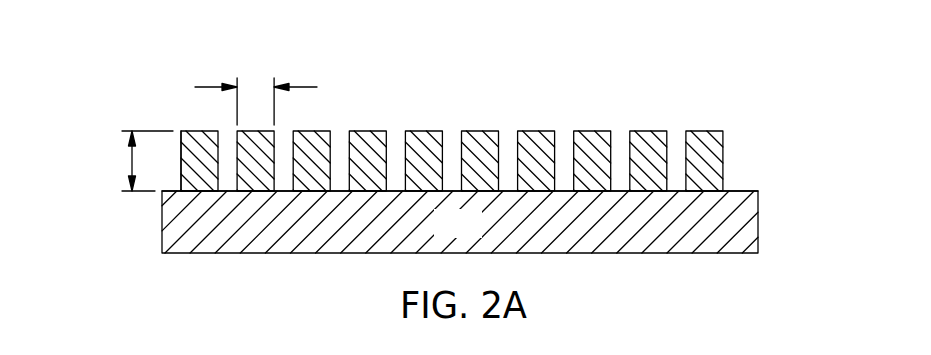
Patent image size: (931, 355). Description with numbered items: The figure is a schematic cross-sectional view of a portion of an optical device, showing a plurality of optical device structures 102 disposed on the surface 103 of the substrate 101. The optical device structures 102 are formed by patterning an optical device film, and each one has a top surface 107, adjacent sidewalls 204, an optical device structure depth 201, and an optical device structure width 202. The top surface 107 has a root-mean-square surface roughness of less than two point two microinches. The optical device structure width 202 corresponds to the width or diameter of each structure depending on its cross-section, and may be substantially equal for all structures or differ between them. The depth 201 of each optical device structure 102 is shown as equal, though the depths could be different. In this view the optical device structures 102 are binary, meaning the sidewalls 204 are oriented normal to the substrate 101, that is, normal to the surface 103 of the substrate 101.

The substrate 101 is at (479, 235).
The optical device structures 102 is at (723, 162).
The surface of the substrate 103 is at (744, 191).
The top surface 107 is at (369, 116).
The optical device structure depth 201 is at (131, 163).
The optical device structure width 202 is at (258, 86).
The sidewalls 204 is at (170, 149).